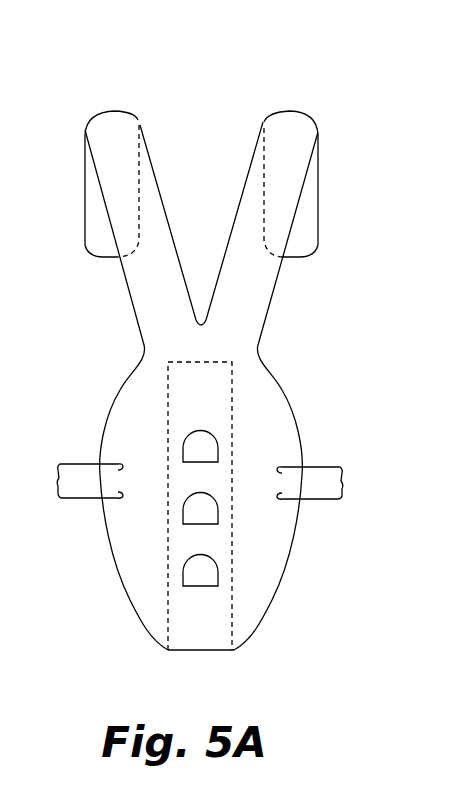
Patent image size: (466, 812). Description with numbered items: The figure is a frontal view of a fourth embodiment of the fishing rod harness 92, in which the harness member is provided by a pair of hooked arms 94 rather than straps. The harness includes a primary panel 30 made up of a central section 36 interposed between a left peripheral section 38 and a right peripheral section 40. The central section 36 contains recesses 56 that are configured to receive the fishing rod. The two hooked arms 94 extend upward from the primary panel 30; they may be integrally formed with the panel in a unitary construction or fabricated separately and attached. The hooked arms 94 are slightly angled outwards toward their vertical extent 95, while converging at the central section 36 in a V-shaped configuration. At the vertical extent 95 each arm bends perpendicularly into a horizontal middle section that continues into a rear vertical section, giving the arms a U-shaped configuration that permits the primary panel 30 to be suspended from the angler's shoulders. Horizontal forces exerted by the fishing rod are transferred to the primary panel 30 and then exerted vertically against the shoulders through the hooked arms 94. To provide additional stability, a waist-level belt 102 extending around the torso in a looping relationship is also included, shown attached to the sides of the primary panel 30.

The fishing rod harness 92 is at (218, 357).
The hooked arms 94 is at (127, 292).
The vertical extent 95 is at (117, 104).
The right peripheral section 40 is at (130, 573).
The left peripheral section 38 is at (265, 569).
The primary panel 30 is at (203, 638).
The central section 36 is at (188, 621).
The recesses 56 is at (213, 585).
The waist-level belt 102 is at (72, 492).